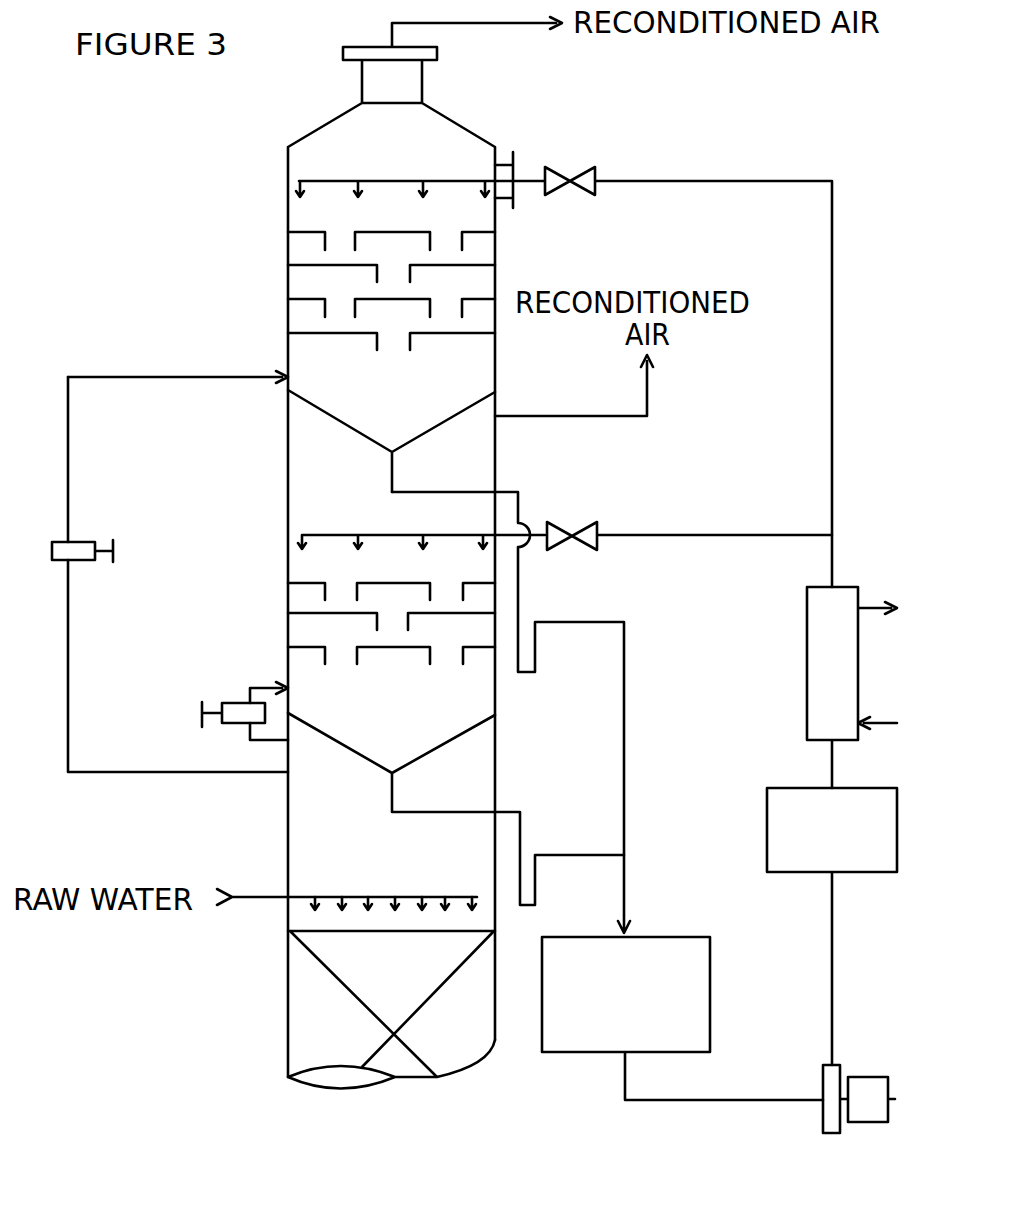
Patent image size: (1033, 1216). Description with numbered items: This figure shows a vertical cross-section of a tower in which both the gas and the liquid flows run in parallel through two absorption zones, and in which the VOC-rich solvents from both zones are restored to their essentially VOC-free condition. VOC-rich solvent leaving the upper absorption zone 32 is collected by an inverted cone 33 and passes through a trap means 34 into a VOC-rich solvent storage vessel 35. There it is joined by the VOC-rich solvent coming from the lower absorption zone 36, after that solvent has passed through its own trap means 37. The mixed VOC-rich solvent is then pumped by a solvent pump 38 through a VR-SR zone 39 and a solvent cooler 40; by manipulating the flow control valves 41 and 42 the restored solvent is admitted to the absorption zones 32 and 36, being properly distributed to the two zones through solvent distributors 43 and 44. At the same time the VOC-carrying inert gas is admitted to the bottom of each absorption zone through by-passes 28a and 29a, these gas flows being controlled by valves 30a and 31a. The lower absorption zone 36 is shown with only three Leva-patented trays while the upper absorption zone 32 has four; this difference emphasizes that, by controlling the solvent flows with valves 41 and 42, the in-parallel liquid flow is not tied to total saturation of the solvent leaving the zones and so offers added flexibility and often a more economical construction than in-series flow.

The by-pass 28a is at (80, 487).
The by-pass 29a is at (277, 685).
The valve 30a is at (85, 567).
The valve 31a is at (217, 723).
The upper absorption zone 32 is at (315, 283).
The inverted cone 33 is at (438, 415).
The trap means 34 is at (543, 618).
The VOC-rich solvent storage vessel 35 is at (645, 943).
The lower absorption zone 36 is at (310, 598).
The trap means 37 is at (530, 853).
The solvent pump 38 is at (817, 1077).
The VR-SR zone 39 is at (777, 832).
The solvent cooler 40 is at (845, 673).
The flow control valve 41 is at (578, 165).
The flow control valve 42 is at (573, 522).
The solvent distributor 43 is at (327, 175).
The solvent distributor 44 is at (330, 530).